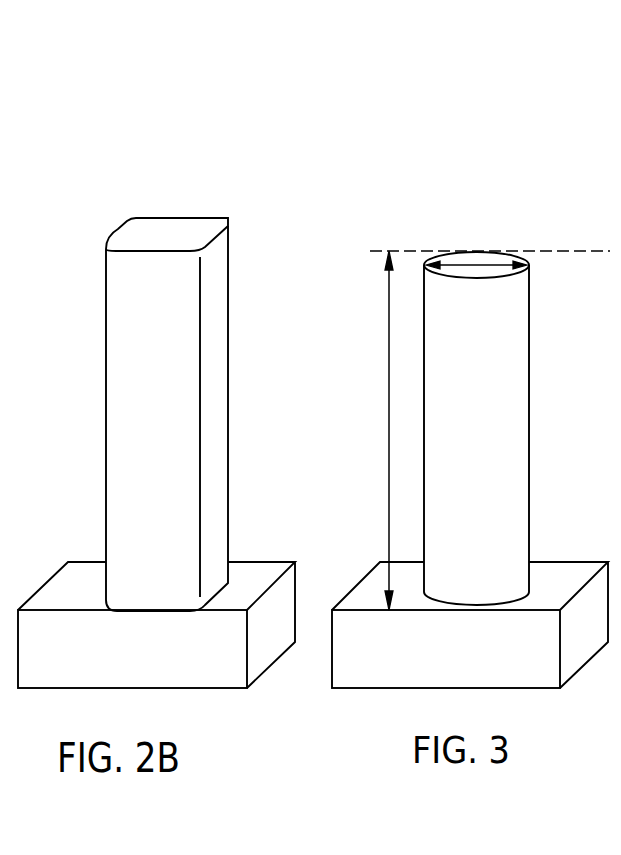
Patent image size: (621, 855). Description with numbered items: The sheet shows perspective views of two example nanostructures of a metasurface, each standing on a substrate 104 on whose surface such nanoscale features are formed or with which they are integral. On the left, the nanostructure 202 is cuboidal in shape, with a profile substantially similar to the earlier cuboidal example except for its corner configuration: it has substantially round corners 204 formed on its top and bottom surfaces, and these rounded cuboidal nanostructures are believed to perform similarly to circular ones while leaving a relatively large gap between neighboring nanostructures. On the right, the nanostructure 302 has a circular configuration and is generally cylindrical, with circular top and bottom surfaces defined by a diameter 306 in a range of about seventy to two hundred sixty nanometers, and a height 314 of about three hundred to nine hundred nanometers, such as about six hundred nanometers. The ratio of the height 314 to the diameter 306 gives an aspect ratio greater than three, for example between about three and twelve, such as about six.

In FIG. 2B, the substrate 104 is at (280, 658).
In FIG. 3, the substrate 104 is at (597, 658).
In FIG. 2B, the nanostructure 202 is at (196, 203).
In FIG. 2B, the round corners 204 is at (228, 218).
In FIG. 3, the nanostructure 302 is at (458, 140).
In FIG. 3, the diameter 306 is at (473, 263).
In FIG. 3, the height 314 is at (389, 348).